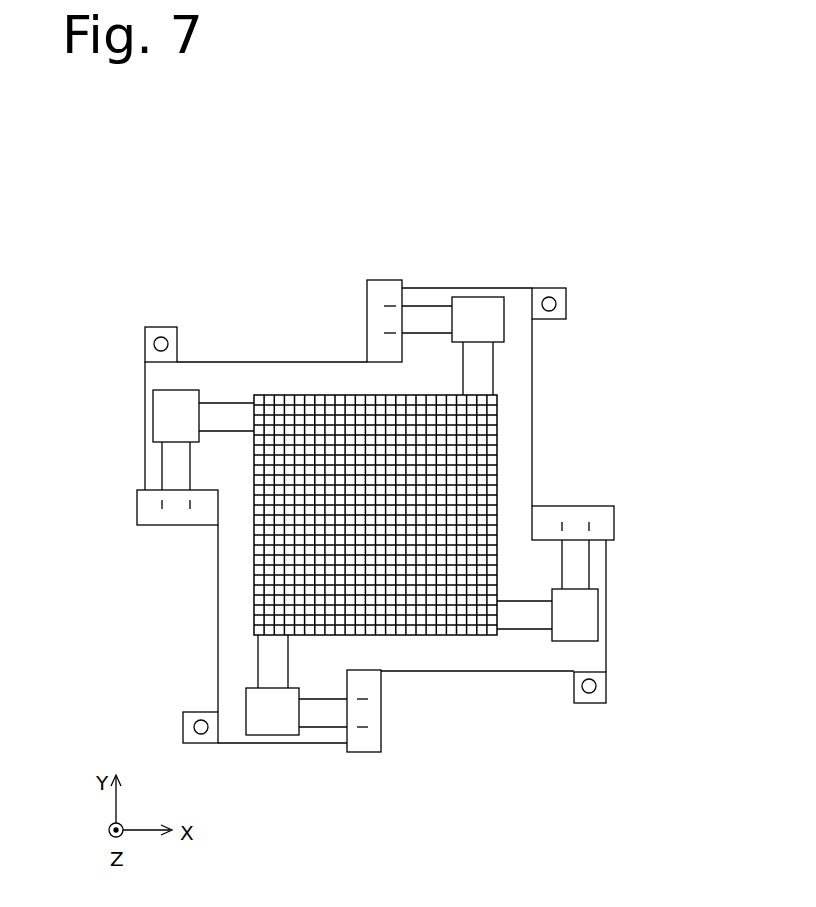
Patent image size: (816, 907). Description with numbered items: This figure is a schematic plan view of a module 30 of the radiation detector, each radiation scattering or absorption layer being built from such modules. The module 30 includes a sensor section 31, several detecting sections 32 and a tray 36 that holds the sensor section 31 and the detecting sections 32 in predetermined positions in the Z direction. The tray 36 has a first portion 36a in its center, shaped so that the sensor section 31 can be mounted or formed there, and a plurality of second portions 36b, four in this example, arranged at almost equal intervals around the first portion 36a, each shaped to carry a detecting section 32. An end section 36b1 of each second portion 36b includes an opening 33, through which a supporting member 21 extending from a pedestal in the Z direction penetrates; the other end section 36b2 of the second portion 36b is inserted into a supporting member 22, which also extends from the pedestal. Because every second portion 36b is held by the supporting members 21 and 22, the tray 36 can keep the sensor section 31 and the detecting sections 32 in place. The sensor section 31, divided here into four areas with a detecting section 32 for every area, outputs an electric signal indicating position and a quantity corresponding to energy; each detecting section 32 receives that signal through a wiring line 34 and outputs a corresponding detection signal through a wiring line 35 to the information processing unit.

The module 30 is at (260, 215).
The supporting member 21 is at (161, 336).
The supporting member 22 is at (387, 280).
The sensor section 31 is at (497, 456).
The detecting section 32 is at (153, 415).
The opening 33 is at (557, 320).
The wiring line 34 is at (520, 614).
The wiring line 35 is at (572, 565).
The tray 36 is at (525, 358).
The first portion 36a is at (533, 405).
The second portion 36b is at (533, 345).
The end section 36b1 is at (566, 284).
The other end section 36b2 is at (415, 295).